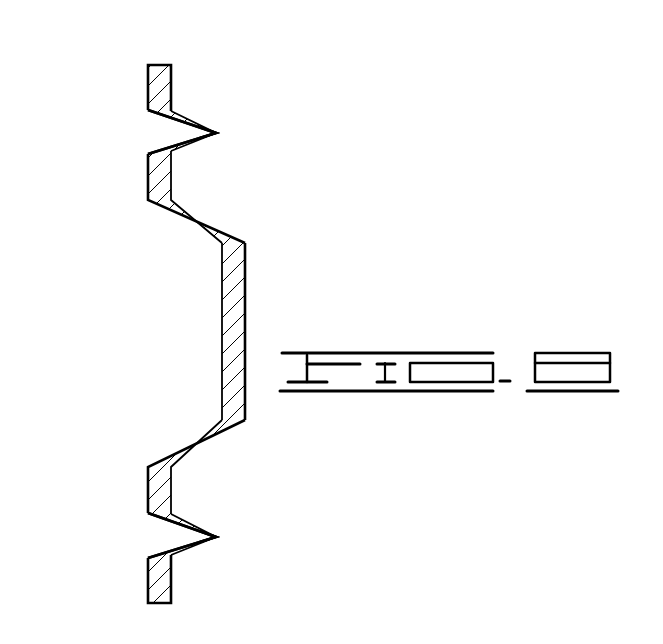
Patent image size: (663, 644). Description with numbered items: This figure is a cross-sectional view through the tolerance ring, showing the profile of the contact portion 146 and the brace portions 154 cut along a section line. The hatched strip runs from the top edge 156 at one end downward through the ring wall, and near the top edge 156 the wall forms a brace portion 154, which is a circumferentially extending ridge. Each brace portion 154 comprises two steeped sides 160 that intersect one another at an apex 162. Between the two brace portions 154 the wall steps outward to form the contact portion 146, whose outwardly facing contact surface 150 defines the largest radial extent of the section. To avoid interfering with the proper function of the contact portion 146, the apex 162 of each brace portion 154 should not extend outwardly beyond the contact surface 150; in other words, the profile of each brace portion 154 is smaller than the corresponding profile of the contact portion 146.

The contact portion 146 is at (268, 332).
The contact surface 150 is at (248, 313).
The brace portion 154 is at (234, 127).
The top edge 156 is at (147, 66).
The steeped side 160 is at (197, 121).
The apex 162 is at (218, 134).